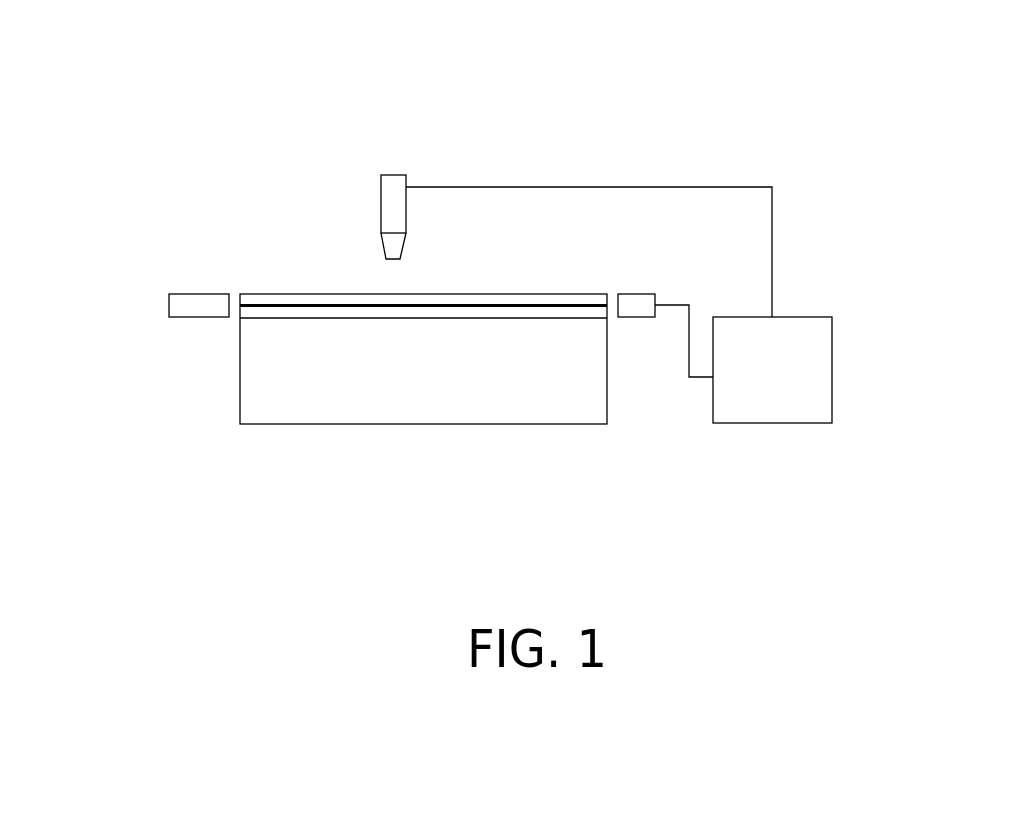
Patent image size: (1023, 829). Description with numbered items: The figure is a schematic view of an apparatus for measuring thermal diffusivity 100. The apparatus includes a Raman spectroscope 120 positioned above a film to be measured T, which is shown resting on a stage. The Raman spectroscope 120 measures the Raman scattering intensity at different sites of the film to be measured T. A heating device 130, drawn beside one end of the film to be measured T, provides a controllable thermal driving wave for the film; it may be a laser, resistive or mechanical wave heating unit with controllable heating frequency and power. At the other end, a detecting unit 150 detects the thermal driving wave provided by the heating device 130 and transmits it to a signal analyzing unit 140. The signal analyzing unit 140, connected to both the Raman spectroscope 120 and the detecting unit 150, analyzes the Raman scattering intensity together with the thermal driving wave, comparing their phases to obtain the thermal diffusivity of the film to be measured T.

The apparatus for measuring thermal diffusivity 100 is at (836, 63).
The Raman spectroscope 120 is at (393, 175).
The heating device 130 is at (169, 305).
The signal analyzing unit 140 is at (832, 373).
The detecting unit 150 is at (633, 318).
The film to be measured T is at (418, 318).